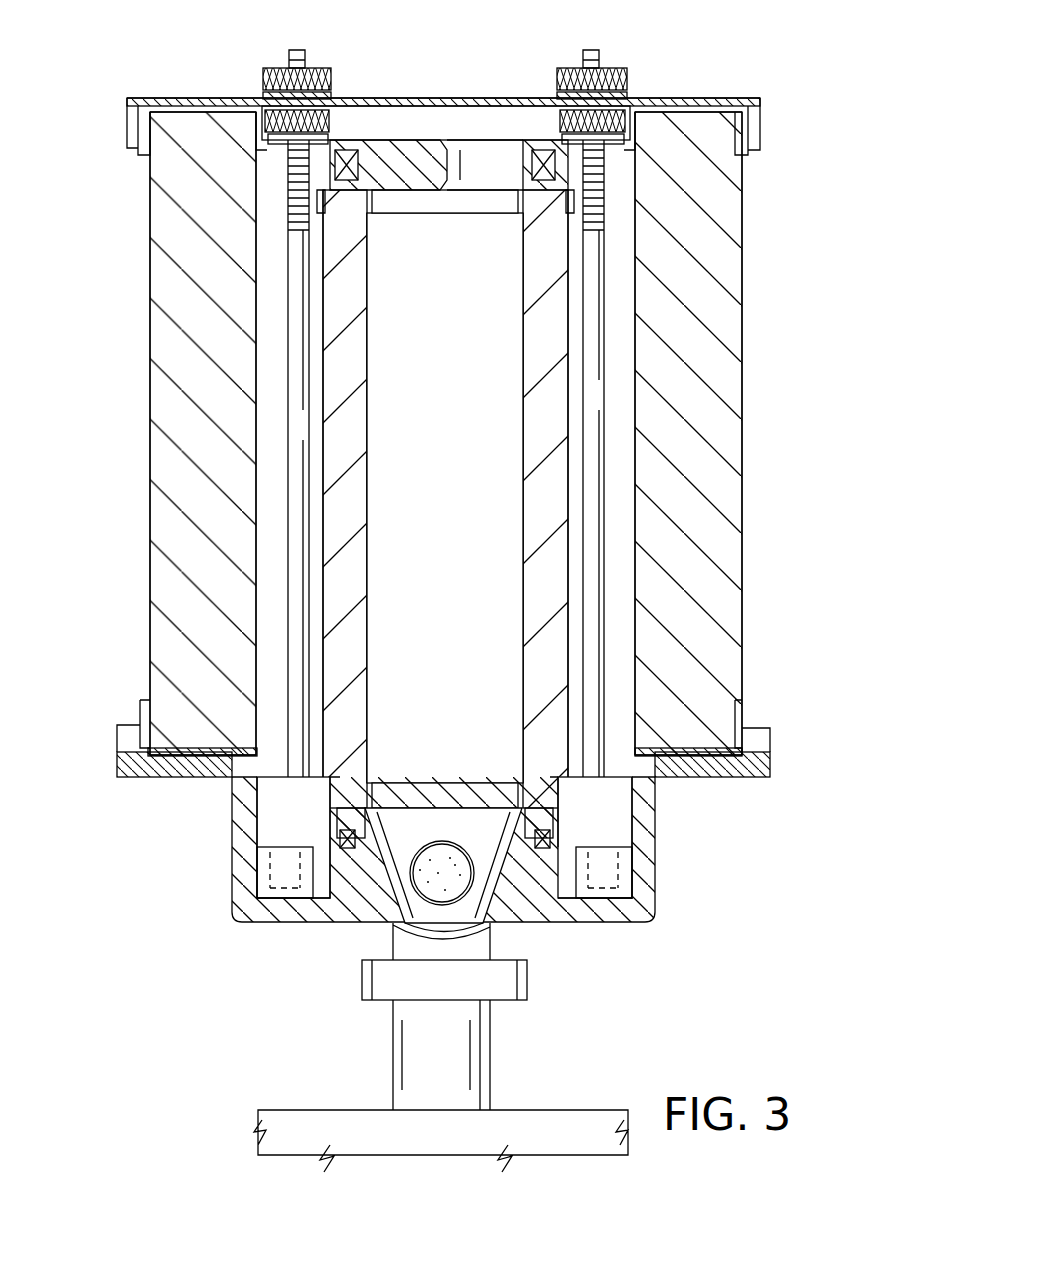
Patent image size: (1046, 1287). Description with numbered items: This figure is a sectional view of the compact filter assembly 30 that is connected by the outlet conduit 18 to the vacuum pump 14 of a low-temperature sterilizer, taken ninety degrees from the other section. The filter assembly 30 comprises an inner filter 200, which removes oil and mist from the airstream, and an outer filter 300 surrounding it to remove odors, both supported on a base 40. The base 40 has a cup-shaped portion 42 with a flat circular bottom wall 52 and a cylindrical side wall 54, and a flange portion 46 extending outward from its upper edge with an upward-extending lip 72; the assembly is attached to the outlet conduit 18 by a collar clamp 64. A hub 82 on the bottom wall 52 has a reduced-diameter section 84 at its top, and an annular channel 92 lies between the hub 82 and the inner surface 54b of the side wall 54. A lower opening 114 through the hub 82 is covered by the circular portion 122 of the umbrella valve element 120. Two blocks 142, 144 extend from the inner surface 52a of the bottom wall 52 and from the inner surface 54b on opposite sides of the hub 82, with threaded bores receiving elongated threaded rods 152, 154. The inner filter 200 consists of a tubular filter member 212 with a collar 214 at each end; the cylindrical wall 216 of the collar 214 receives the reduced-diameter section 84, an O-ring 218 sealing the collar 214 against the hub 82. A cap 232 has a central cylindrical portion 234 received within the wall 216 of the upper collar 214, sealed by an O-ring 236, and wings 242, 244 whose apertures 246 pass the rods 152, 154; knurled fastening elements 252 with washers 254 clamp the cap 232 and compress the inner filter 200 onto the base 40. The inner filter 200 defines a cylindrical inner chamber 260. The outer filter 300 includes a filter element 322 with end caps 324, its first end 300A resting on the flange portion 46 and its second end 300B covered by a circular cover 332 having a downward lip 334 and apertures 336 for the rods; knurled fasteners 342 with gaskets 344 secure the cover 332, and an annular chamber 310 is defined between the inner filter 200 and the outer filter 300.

The vacuum pump 14 is at (590, 1108).
The outlet conduit 18 is at (486, 1078).
The filter assembly 30 is at (770, 78).
The base 40 is at (660, 920).
The cup-shaped portion 42 is at (657, 868).
The flange portion 46 is at (748, 780).
The bottom wall 52 is at (304, 925).
The inner surface of bottom wall 52a is at (640, 892).
The side wall 54 is at (650, 848).
The inner surface of side wall 54b is at (626, 803).
The collar clamp 64 is at (373, 1000).
The lip 72 is at (770, 738).
The hub 82 is at (553, 840).
The reduced-diameter section 84 is at (543, 832).
The annular channel 92 is at (282, 805).
The lower opening 114 is at (398, 912).
The valve element 120 is at (433, 840).
The circular portion 122 is at (450, 842).
The block 142 is at (272, 910).
The block 144 is at (604, 882).
The threaded rod 152 is at (300, 570).
The threaded rod 154 is at (598, 582).
The inner filter 200 is at (572, 373).
The tubular filter member 212 is at (562, 445).
The collar 214 is at (576, 203).
The cylindrical wall 216 is at (343, 162).
The O-ring 218 is at (545, 855).
The cap 232 is at (430, 138).
The cylindrical portion 234 is at (461, 172).
The O-ring 236 is at (530, 162).
The wing 242 is at (290, 200).
The wing 244 is at (612, 155).
The aperture 246 is at (298, 232).
The knurled fastening element 252 is at (278, 112).
The washer 254 is at (330, 142).
The inner chamber 260 is at (465, 478).
The outer filter 300 is at (746, 295).
The first end of outer filter 300A is at (180, 718).
The second end of outer filter 300B is at (207, 160).
The annular chamber 310 is at (617, 462).
The filter element 322 is at (720, 495).
The end cap 324 is at (140, 148).
The cover 332 is at (468, 96).
The lip 334 is at (758, 128).
The aperture 336 is at (300, 52).
The knurled fastener 342 is at (266, 72).
The gasket 344 is at (332, 96).